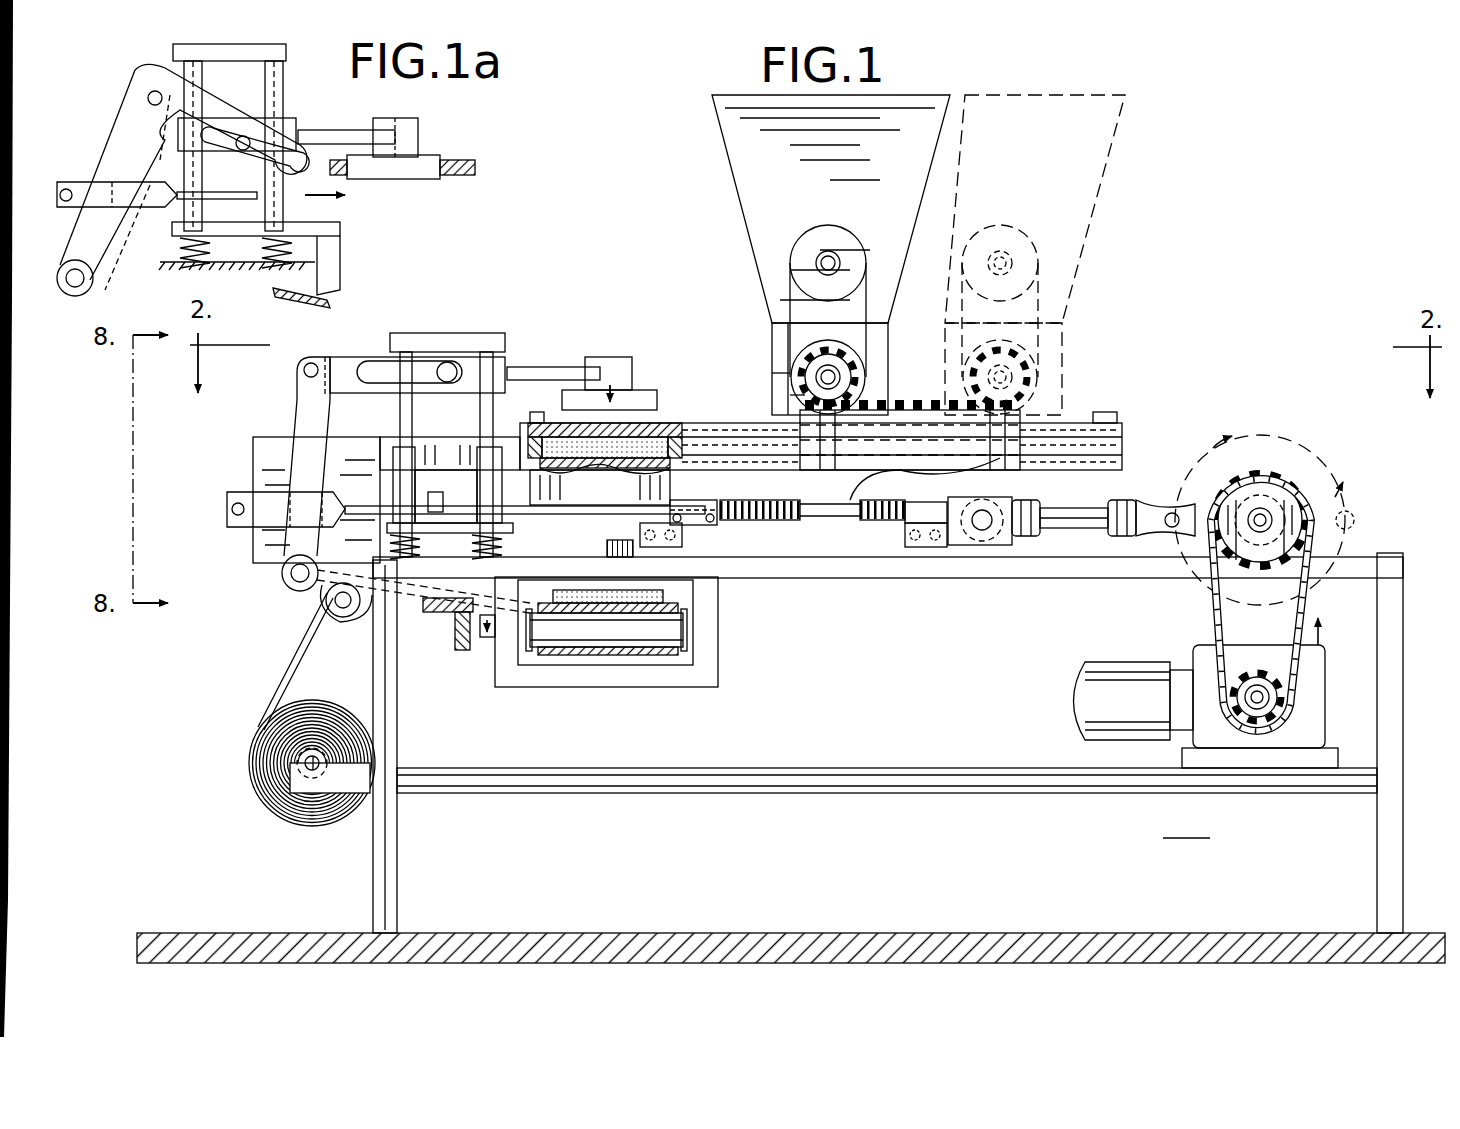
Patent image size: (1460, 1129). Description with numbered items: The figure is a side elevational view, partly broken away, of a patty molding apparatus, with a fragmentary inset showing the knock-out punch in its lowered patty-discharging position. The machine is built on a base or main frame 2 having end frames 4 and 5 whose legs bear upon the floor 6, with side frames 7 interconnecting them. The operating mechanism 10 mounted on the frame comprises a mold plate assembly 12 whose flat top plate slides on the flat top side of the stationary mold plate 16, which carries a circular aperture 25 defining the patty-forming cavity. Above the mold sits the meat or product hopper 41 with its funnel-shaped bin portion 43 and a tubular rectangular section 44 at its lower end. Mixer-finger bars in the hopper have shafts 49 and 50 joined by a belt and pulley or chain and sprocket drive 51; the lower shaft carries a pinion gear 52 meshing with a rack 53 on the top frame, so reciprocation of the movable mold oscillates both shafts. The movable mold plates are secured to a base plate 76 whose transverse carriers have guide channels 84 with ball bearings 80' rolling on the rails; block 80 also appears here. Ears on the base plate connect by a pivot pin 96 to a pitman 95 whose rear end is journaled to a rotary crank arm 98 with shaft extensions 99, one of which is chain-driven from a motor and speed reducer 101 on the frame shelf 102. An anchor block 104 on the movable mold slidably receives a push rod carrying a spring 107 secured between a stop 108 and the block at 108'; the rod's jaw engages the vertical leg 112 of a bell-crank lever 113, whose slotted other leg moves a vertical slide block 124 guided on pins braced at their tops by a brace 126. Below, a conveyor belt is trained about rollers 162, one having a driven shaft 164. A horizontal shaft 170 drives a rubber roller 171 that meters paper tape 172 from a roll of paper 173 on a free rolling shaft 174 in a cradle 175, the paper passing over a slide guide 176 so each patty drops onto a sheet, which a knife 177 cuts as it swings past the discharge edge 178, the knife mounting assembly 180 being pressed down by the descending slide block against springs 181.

In FIG. 1, the base or main frame 2 is at (385, 882).
In FIG. 1, the end frame 4 is at (1397, 823).
In FIG. 1, the end frame 5 is at (373, 840).
In FIG. 1, the floor 6 is at (625, 933).
In FIG. 1, the side frames 7 is at (822, 778).
In FIG. 1, the operating mechanism 10 is at (1130, 405).
In FIG. 1, the mold plate assembly 12 is at (695, 420).
In FIG. 1, the stationary mold plate 16 is at (445, 445).
In FIG. 1, the circular aperture 25 is at (540, 428).
In FIG. 1, the meat or product hopper 41 is at (935, 100).
In FIG. 1, the funnel-shaped bin portion 43 is at (740, 196).
In FIG. 1, the tubular rectangular section 44 is at (772, 378).
In FIG. 1, the upper shaft 49 is at (820, 262).
In FIG. 1, the lower shaft 50 is at (830, 378).
In FIG. 1, the belt and pulley or chain and sprocket drive 51 is at (795, 332).
In FIG. 1, the pinion gear 52 is at (790, 395).
In FIG. 1, the rack 53 is at (1005, 455).
In FIG. 1, the bottom or base plate 76 is at (945, 512).
In FIG. 1, the slide block 80 is at (913, 560).
In FIG. 1, the ball bearings 80' is at (837, 561).
In FIG. 1, the guide channel 84 is at (640, 590).
In FIG. 1, the pitman 95 is at (1090, 520).
In FIG. 1, the pivot pin 96 is at (983, 531).
In FIG. 1, the rotary crank arm 98 is at (1197, 470).
In FIG. 1, the shaft extensions 99 is at (1265, 515).
In FIG. 1, the motor and speed reducer 101 is at (1082, 703).
In FIG. 1, the frame shelf 102 is at (1187, 824).
In FIG. 1, the anchor block 104 is at (705, 504).
In FIG. 1, the spring 107 is at (770, 520).
In FIG. 1, the stop 108 is at (923, 561).
In FIG. 1, the spring attachment point 108' is at (728, 559).
In FIG. 1, the vertical leg 112 is at (300, 457).
In FIG. 1, the bell-crank lever 113 is at (293, 402).
In FIG. 1a, the vertical slide block 124 is at (282, 128).
In FIG. 1, the vertical slide block 124 is at (505, 352).
In FIG. 1, the brace 126 is at (452, 333).
In FIG. 1, the roller 162 is at (607, 630).
In FIG. 1, the roller shaft 164 is at (485, 640).
In FIG. 1, the horizontal shaft 170 is at (288, 592).
In FIG. 1, the rubber roller 171 is at (340, 617).
In FIG. 1, the paper tape 172 is at (283, 660).
In FIG. 1, the spool or roll of paper 173 is at (260, 778).
In FIG. 1, the free rolling shaft 174 is at (313, 757).
In FIG. 1, the cradle 175 is at (293, 785).
In FIG. 1, the slide guide 176 is at (500, 620).
In FIG. 1a, the knife 177 is at (342, 250).
In FIG. 1, the knife 177 is at (520, 568).
In FIG. 1a, the discharge edge 178 is at (330, 300).
In FIG. 1, the discharge edge 178 is at (540, 590).
In FIG. 1a, the knife mounting assembly 180 is at (322, 225).
In FIG. 1, the knife mounting assembly 180 is at (520, 535).
In FIG. 1a, the springs 181 is at (250, 245).
In FIG. 1, the springs 181 is at (405, 560).